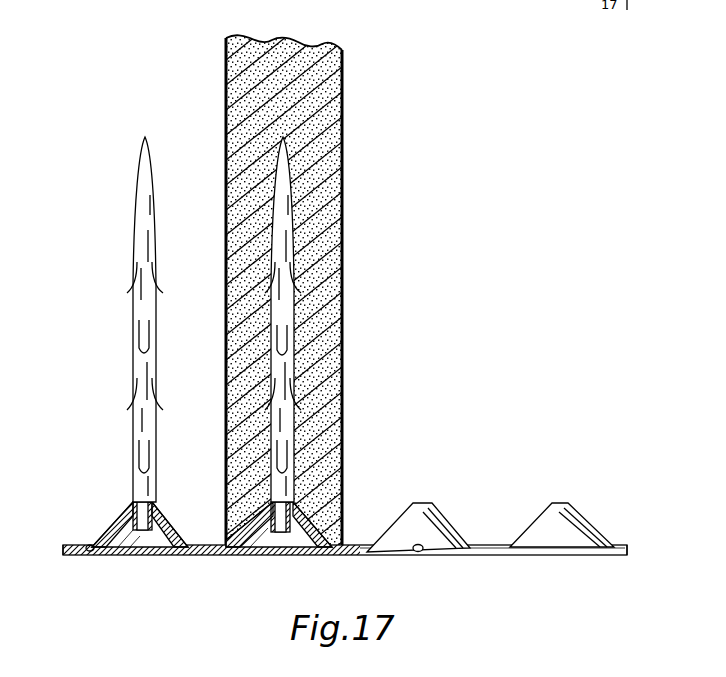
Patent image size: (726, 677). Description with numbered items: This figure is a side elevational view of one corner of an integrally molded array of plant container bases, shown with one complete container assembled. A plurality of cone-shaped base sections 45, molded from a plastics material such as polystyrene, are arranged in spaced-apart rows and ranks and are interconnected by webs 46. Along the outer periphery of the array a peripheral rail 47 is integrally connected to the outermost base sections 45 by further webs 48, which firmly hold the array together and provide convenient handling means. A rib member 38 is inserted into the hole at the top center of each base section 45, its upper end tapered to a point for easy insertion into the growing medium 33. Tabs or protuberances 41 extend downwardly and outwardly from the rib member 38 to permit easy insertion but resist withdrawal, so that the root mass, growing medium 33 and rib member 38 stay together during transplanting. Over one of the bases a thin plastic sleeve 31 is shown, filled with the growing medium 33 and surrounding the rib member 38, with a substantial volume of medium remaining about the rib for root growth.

The sleeve 31 is at (315, 317).
The growing medium 33 is at (318, 103).
The rib member 38 is at (132, 350).
The protuberances 41 is at (126, 286).
The cone-shaped base sections 45 is at (114, 522).
The webs 46 is at (205, 546).
The peripheral rail 47 is at (65, 546).
The webs 48 is at (90, 546).